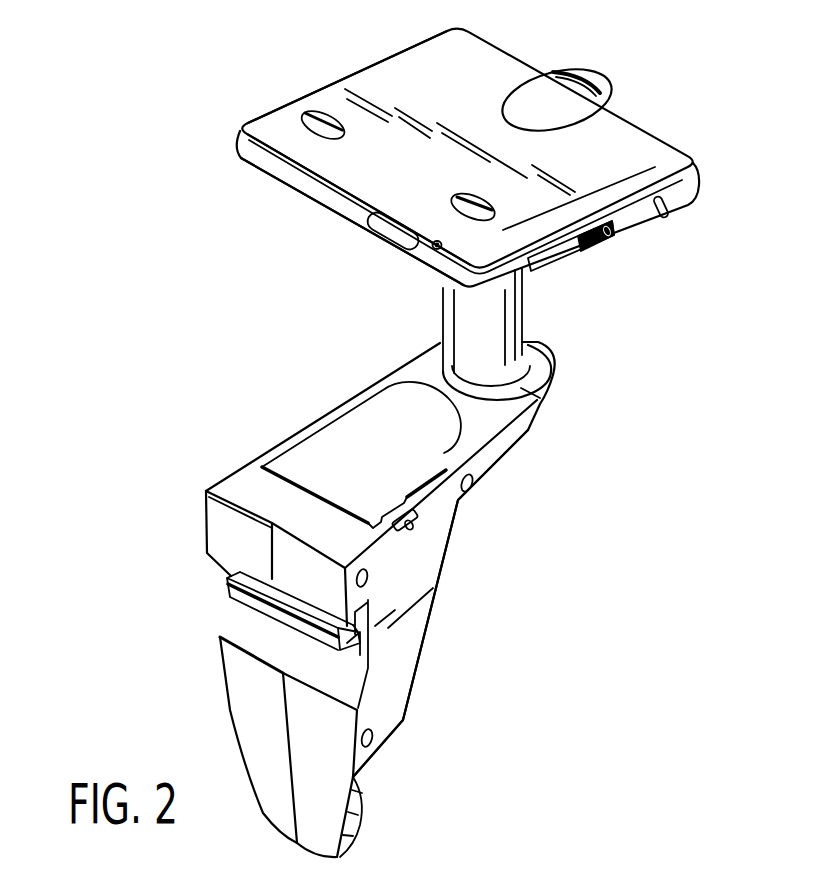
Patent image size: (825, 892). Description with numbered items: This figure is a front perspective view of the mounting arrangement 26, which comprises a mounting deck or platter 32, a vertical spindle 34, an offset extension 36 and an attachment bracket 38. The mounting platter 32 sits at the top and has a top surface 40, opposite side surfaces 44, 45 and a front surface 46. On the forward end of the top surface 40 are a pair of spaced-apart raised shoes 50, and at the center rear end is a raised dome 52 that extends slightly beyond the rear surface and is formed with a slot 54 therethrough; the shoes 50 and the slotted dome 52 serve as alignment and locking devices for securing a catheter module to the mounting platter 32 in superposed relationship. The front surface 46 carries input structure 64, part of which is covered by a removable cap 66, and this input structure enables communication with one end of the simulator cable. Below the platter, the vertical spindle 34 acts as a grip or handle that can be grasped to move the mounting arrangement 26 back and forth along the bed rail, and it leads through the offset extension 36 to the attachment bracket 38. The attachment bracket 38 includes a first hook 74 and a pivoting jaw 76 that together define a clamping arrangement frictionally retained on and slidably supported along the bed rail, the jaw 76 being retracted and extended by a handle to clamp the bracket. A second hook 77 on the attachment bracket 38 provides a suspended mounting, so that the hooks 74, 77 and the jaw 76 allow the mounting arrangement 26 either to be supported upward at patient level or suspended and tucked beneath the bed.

The mounting arrangement 26 is at (399, 599).
The mounting platter 32 is at (707, 177).
The vertical spindle 34 is at (535, 312).
The offset extension 36 is at (432, 453).
The attachment bracket 38 is at (434, 655).
The top surface 40 is at (417, 77).
The side surface 44 is at (637, 227).
The side surface 45 is at (300, 96).
The front surface 46 is at (262, 180).
The raised shoes 50 is at (321, 132).
The raised dome 52 is at (562, 77).
The slot 54 is at (588, 83).
The input structure 64 is at (358, 216).
The removable cap 66 is at (390, 234).
The first hook 74 is at (210, 543).
The pivoting jaw 76 is at (227, 583).
The second hook 77 is at (362, 812).